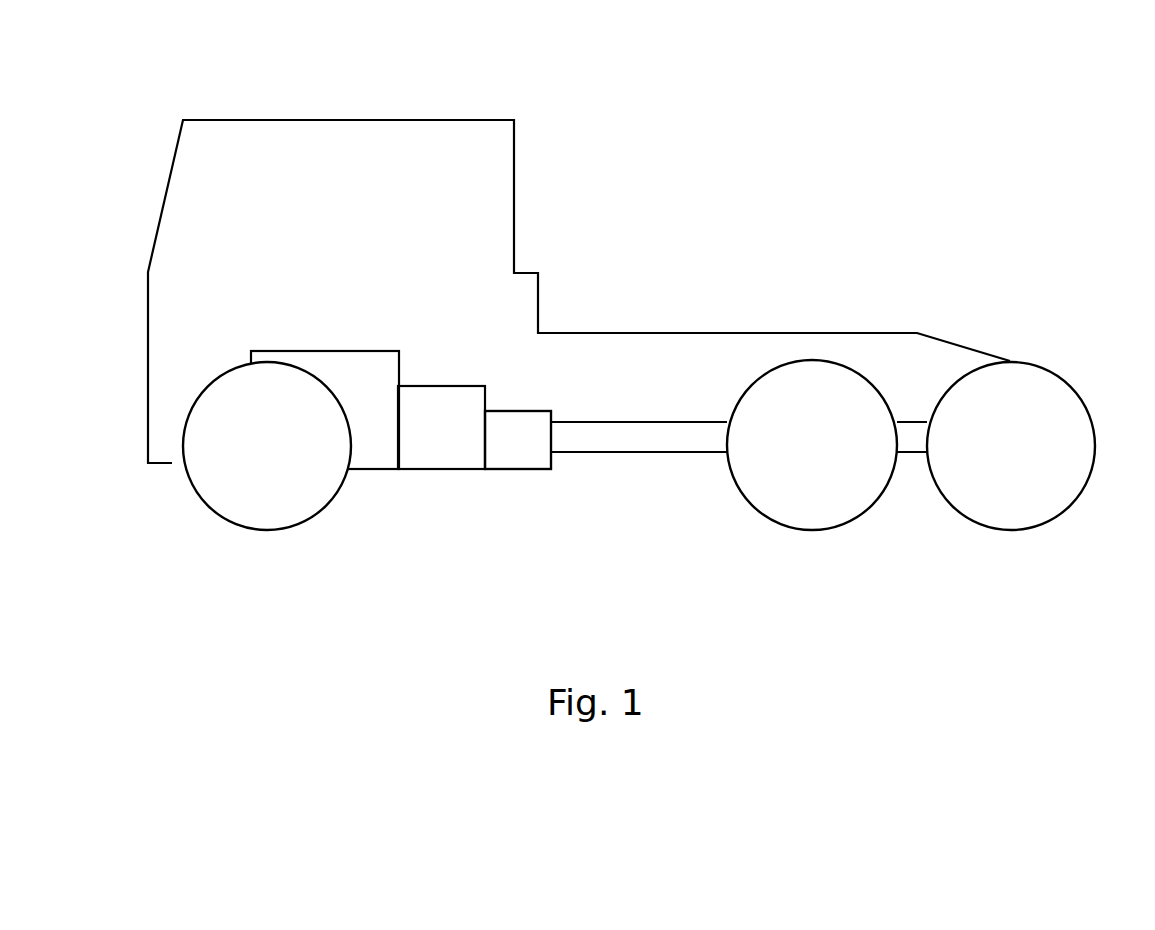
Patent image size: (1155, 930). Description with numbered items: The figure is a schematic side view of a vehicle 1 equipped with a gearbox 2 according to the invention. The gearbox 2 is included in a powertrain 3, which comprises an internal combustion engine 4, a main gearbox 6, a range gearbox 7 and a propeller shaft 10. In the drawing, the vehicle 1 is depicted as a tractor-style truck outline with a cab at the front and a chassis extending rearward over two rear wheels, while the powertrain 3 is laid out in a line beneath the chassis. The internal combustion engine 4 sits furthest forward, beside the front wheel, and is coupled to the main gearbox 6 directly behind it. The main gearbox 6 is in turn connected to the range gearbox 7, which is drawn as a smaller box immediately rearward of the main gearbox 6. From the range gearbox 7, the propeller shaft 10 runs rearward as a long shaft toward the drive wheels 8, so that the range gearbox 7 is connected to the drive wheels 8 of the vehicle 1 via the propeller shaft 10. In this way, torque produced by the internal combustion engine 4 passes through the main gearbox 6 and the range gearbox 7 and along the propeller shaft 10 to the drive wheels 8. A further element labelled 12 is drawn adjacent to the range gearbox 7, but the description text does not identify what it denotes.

The vehicle 1 is at (637, 85).
The gearbox 2 is at (471, 318).
The powertrain 3 is at (428, 538).
The internal combustion engine 4 is at (295, 348).
The main gearbox 6 is at (440, 386).
The range gearbox 7 is at (537, 411).
The drive wheels 8 is at (857, 517).
The propeller shaft 10 is at (638, 452).
The clutch 12 is at (522, 469).